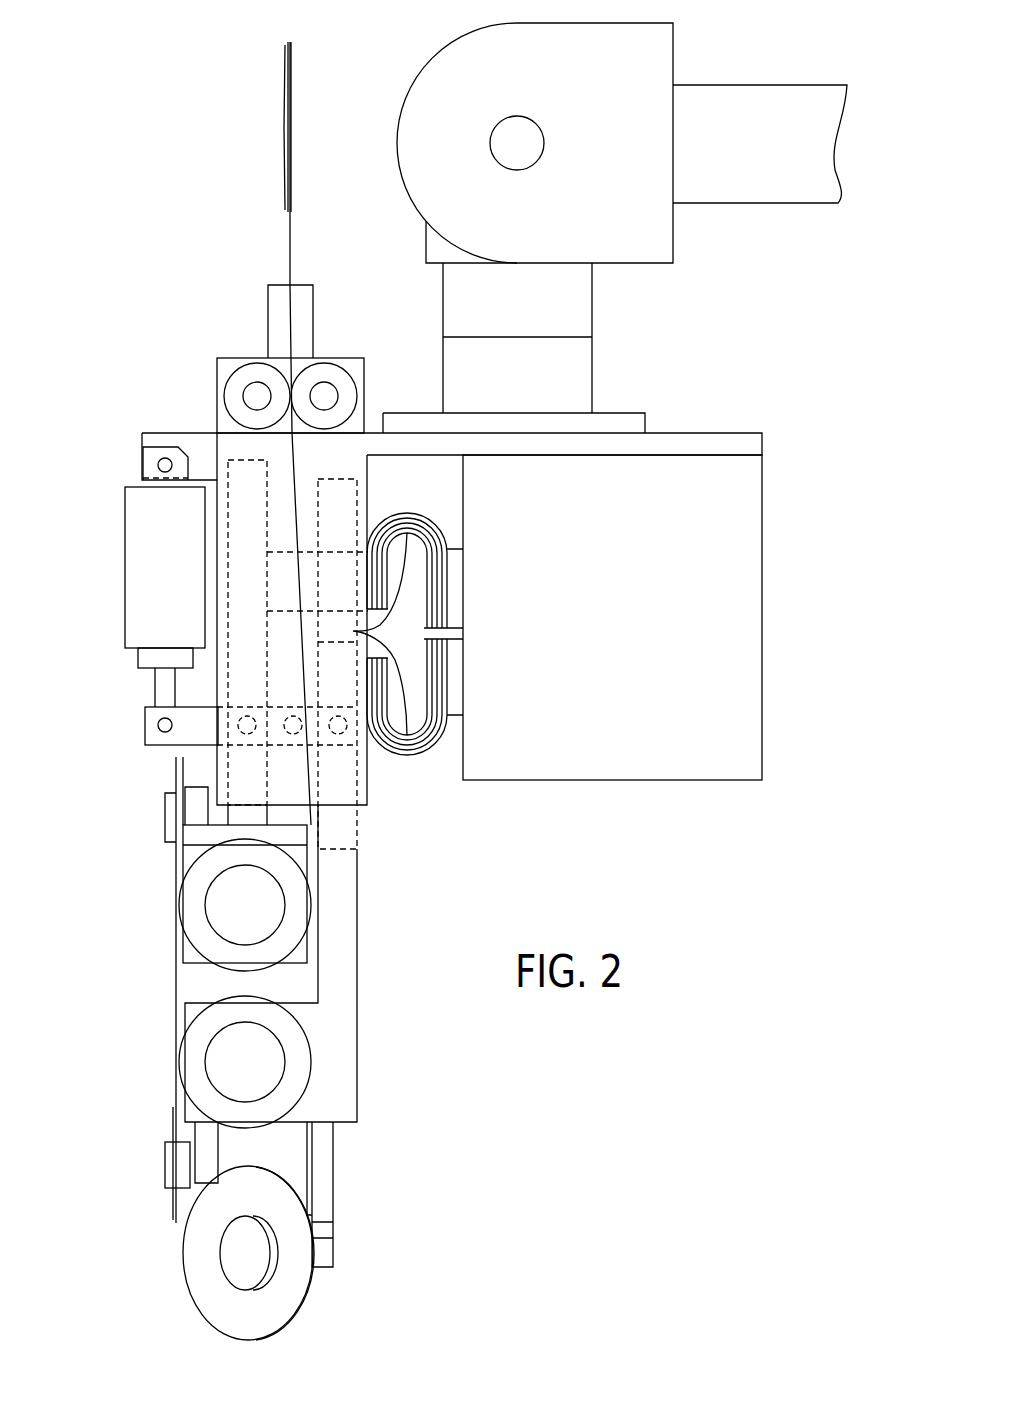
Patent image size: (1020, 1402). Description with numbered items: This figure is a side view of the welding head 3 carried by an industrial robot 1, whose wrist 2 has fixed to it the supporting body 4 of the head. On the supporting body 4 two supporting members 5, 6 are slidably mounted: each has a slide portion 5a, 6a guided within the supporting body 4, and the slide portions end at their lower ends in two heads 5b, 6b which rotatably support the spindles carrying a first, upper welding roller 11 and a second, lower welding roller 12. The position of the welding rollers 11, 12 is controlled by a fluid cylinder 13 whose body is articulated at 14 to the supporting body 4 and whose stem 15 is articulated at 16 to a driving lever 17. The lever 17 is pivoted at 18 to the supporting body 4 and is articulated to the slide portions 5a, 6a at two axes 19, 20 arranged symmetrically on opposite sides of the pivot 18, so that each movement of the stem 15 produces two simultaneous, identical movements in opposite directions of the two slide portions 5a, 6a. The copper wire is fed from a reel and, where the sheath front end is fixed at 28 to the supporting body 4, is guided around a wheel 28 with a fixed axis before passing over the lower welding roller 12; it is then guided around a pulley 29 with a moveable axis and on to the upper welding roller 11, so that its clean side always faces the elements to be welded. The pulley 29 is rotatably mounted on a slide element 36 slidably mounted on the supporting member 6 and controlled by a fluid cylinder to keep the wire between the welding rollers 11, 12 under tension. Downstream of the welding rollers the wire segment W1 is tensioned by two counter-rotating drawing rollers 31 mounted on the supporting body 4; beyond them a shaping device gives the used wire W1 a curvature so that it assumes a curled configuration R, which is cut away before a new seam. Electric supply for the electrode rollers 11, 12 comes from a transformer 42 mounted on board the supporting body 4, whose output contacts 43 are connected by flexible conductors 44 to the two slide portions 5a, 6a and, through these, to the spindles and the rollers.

The industrial robot 1 is at (413, 78).
The wrist 2 is at (568, 300).
The welding head 3 is at (187, 412).
The supporting body 4 is at (663, 443).
The supporting member 5 is at (177, 905).
The slide portion 5a is at (245, 517).
The head 5b is at (193, 958).
The supporting member 6 is at (177, 1060).
The slide portion 6a is at (340, 492).
The head 6b is at (192, 1013).
The first welding roller 11 is at (303, 910).
The second welding roller 12 is at (303, 1065).
The fluid cylinder 13 is at (138, 587).
The articulation 14 is at (158, 465).
The stem 15 is at (160, 700).
The articulation 16 is at (157, 727).
The driving lever 17 is at (193, 735).
The pivot axis 18 is at (293, 734).
The articulation axis 19 is at (247, 716).
The articulation axis 20 is at (338, 734).
The wheel with fixed axis 28 is at (180, 1200).
The moveable pulley 29 is at (283, 1293).
The drawing rollers 31 is at (325, 390).
The slide element 36 is at (323, 1247).
The electric transformer 42 is at (745, 547).
The output contacts 43 is at (452, 572).
The flexible conductors 44 is at (355, 631).
The curl R is at (287, 142).
The copper wire segment W1 is at (292, 230).